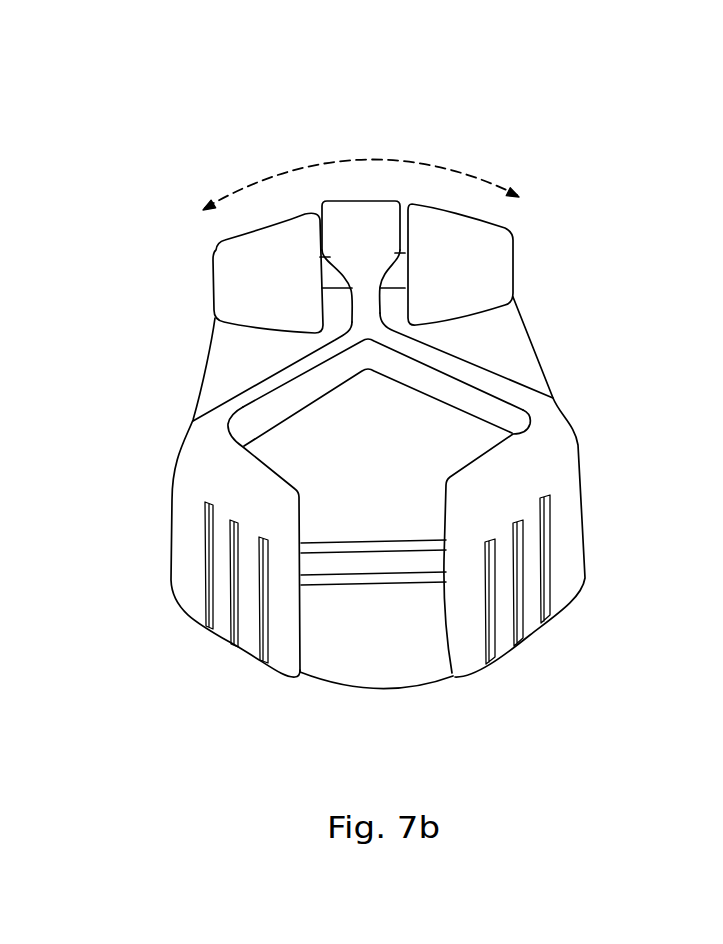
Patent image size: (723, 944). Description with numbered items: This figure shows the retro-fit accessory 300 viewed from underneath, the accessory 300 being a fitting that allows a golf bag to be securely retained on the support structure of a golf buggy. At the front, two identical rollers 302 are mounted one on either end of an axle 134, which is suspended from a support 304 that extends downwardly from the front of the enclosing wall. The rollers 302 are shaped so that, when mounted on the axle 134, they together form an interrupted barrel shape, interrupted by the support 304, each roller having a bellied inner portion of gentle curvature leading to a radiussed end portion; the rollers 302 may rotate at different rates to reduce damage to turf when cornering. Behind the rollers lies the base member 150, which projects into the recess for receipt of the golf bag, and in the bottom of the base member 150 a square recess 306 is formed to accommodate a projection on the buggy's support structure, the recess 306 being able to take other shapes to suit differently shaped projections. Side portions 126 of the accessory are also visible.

The retro-fit accessory 300 is at (566, 161).
The roller 302 is at (227, 262).
The support 304 is at (380, 217).
The recess 306 is at (323, 435).
The axle 134 is at (330, 275).
The base member 150 is at (513, 345).
The pad / flap 126 is at (488, 272).